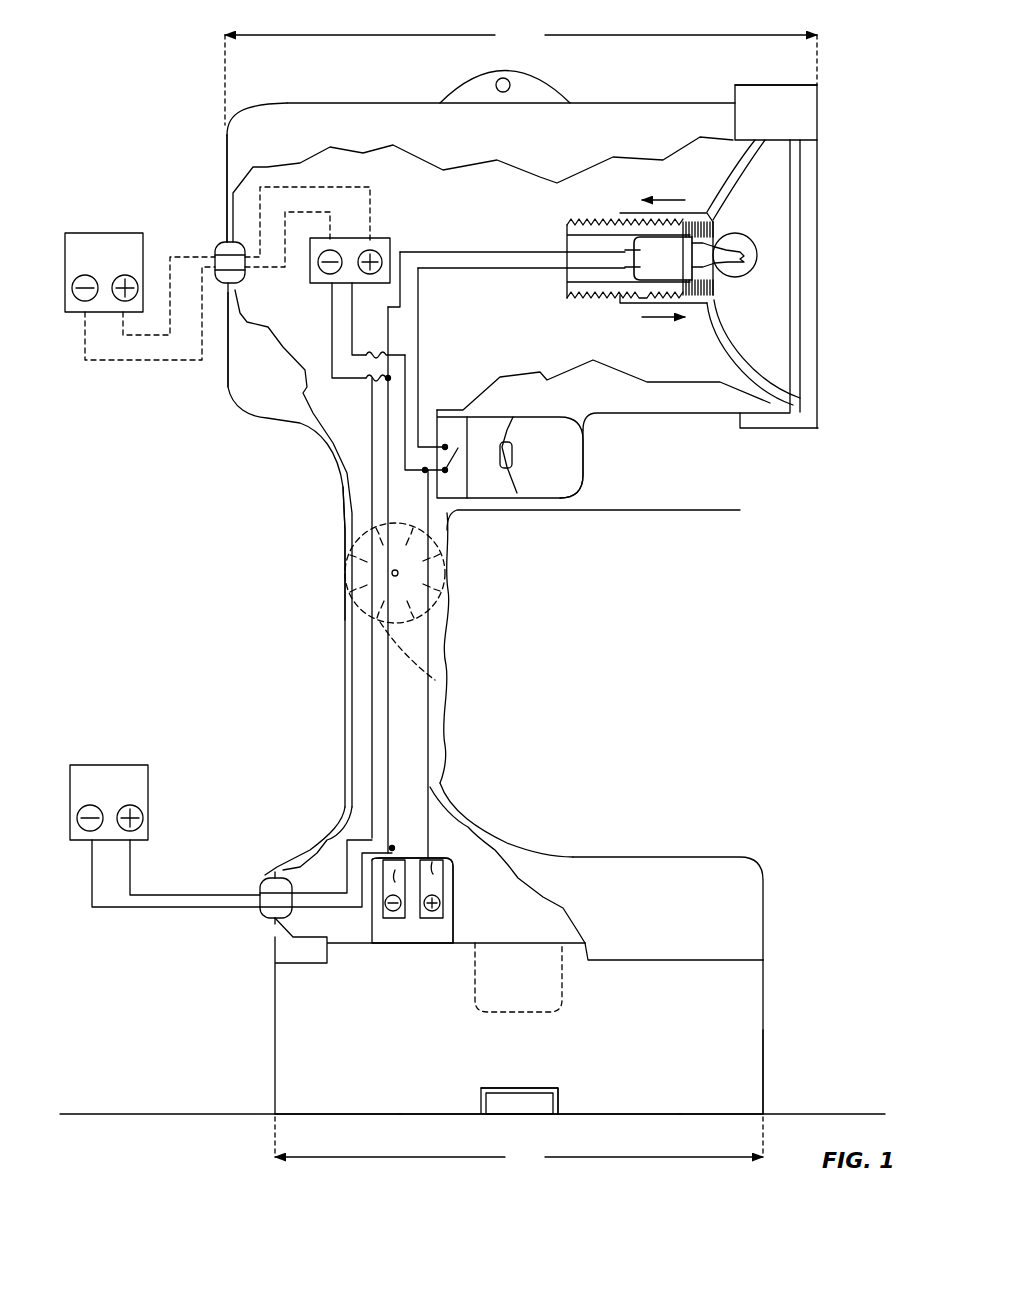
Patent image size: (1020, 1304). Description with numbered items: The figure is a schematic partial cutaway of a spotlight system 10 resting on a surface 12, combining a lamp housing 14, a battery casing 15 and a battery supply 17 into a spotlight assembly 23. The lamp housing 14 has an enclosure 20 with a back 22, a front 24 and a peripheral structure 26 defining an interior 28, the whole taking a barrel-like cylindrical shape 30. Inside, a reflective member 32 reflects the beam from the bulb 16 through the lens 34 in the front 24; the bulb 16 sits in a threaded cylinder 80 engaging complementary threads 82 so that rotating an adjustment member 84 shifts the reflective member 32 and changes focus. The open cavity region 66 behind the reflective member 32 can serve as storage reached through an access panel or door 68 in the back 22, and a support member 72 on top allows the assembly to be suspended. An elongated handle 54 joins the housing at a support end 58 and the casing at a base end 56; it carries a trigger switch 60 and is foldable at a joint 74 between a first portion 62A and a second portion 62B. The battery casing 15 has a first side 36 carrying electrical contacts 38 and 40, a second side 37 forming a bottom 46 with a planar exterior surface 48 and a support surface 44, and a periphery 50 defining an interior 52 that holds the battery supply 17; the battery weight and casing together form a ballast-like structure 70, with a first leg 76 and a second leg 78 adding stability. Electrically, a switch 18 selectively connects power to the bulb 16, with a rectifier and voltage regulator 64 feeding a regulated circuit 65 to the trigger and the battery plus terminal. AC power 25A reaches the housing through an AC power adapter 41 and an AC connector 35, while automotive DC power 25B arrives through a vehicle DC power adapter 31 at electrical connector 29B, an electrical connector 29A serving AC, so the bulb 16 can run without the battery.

The spotlight system 10 is at (130, 70).
The surface 12 is at (820, 1113).
The lamp housing 14 is at (677, 85).
The battery casing 15 is at (793, 960).
The bulb 16 is at (733, 287).
The battery supply 17 is at (790, 1012).
The switch 18 is at (462, 460).
The enclosure 20 is at (695, 102).
The back 22 is at (207, 183).
The spotlight assembly 23 is at (657, 525).
The front 24 is at (823, 385).
The AC power 25A is at (98, 222).
The automotive DC power 25B is at (105, 757).
The peripheral structure 26 is at (517, 135).
The interior 28 is at (393, 172).
The electrical connector 29A is at (215, 888).
The electrical connector 29B is at (260, 877).
The cylindrical shape 30 is at (822, 92).
The vehicle DC power adapter 31 is at (112, 918).
The reflective member 32 is at (753, 272).
The lens 34 is at (806, 230).
The AC connector 35 is at (217, 238).
The first side 36 is at (637, 910).
The second side 37 is at (620, 1122).
The electrical contact 38 is at (397, 875).
The electrical contact 40 is at (440, 865).
The AC power adapter 41 is at (105, 368).
The support surface 44 is at (360, 1120).
The bottom 46 is at (463, 1117).
The planar exterior surface 48 is at (693, 1117).
The periphery 50 is at (267, 995).
The interior 52 is at (317, 1008).
The elongated handle 54 is at (460, 610).
The base end 56 is at (310, 803).
The support end 58 is at (337, 682).
The trigger switch 60 is at (522, 433).
The first portion 62A is at (467, 537).
The second portion 62B is at (478, 767).
The rectifier and voltage regulator 64 is at (393, 233).
The circuit 65 is at (397, 347).
The cavity region 66 is at (303, 175).
The access panel or door 68 is at (213, 378).
The ballast-like structure 70 is at (790, 1065).
The support member 72 is at (457, 88).
The joint 74 is at (435, 680).
The first leg 76 is at (545, 1116).
The second leg 78 is at (513, 1108).
The threaded cylinder 80 is at (570, 223).
The complementary threads 82 is at (637, 213).
The adjustment member 84 is at (790, 84).